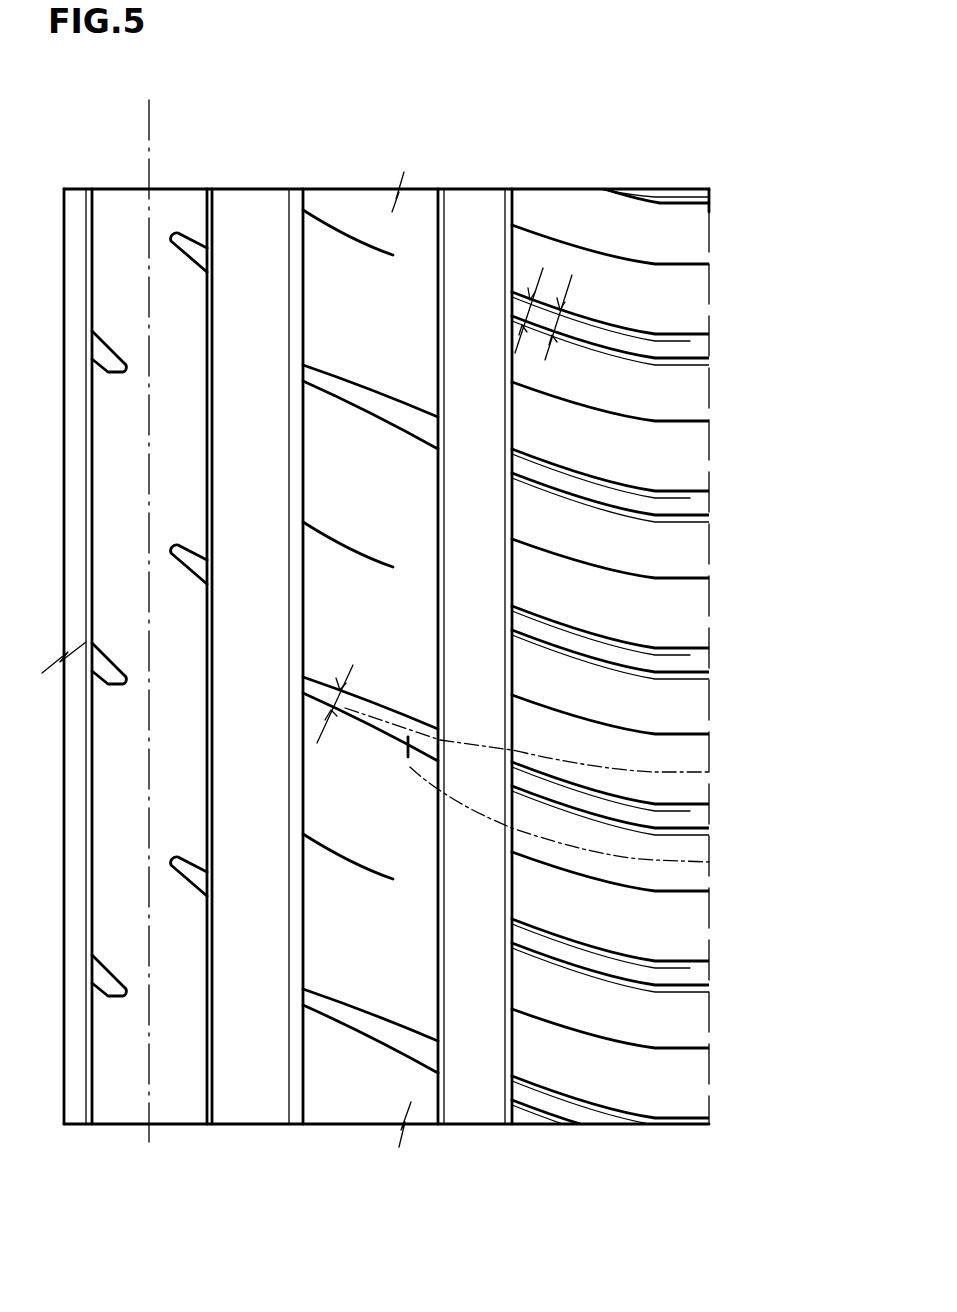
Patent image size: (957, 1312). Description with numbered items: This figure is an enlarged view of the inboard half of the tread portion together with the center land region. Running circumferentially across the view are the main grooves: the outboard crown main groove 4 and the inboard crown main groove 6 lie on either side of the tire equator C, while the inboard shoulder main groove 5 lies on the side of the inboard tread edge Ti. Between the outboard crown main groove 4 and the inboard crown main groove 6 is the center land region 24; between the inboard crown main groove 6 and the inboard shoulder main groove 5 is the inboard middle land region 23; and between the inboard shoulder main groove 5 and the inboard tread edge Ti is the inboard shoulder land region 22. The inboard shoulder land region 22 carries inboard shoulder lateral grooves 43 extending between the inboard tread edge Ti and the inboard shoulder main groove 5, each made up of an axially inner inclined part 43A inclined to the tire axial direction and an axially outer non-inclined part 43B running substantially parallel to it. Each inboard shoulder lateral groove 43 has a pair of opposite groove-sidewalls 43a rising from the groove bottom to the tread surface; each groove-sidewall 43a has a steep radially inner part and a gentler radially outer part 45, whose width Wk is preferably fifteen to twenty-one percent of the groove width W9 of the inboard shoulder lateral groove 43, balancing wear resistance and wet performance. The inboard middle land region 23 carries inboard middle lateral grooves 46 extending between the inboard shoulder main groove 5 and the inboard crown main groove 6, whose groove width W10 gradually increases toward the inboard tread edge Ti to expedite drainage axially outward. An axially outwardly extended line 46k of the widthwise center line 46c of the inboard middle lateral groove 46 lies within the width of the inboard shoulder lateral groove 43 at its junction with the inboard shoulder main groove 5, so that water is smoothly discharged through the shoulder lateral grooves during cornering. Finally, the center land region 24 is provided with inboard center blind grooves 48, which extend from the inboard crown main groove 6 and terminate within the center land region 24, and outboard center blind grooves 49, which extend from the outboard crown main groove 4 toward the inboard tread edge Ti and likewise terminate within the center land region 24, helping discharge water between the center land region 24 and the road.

The outboard crown main groove 4 is at (72, 212).
The center land region 24 is at (114, 212).
The tire equator C is at (149, 607).
The inboard crown main groove 6 is at (232, 212).
The inboard middle land region 23 is at (350, 212).
The inboard shoulder main groove 5 is at (463, 212).
The inboard shoulder land region 22 is at (597, 212).
The inboard tread edge Ti is at (714, 207).
The width of the radially outer part Wk is at (525, 335).
The radially outer part 45 is at (556, 333).
The groove-sidewall 43a is at (645, 333).
The inboard shoulder lateral groove 43 is at (683, 720).
The axially inner inclined part 43A is at (585, 640).
The axially outer non-inclined part 43B is at (680, 658).
The groove width of the inboard shoulder lateral grooves W9 is at (534, 290).
The groove width of the inboard middle lateral grooves W10 is at (338, 688).
The inboard middle lateral groove 46 is at (390, 1045).
The axially outwardly extended line 46k is at (709, 772).
The widthwise center line 46c is at (709, 862).
The inboard center blind groove 48 is at (187, 874).
The outboard center blind groove 49 is at (110, 987).